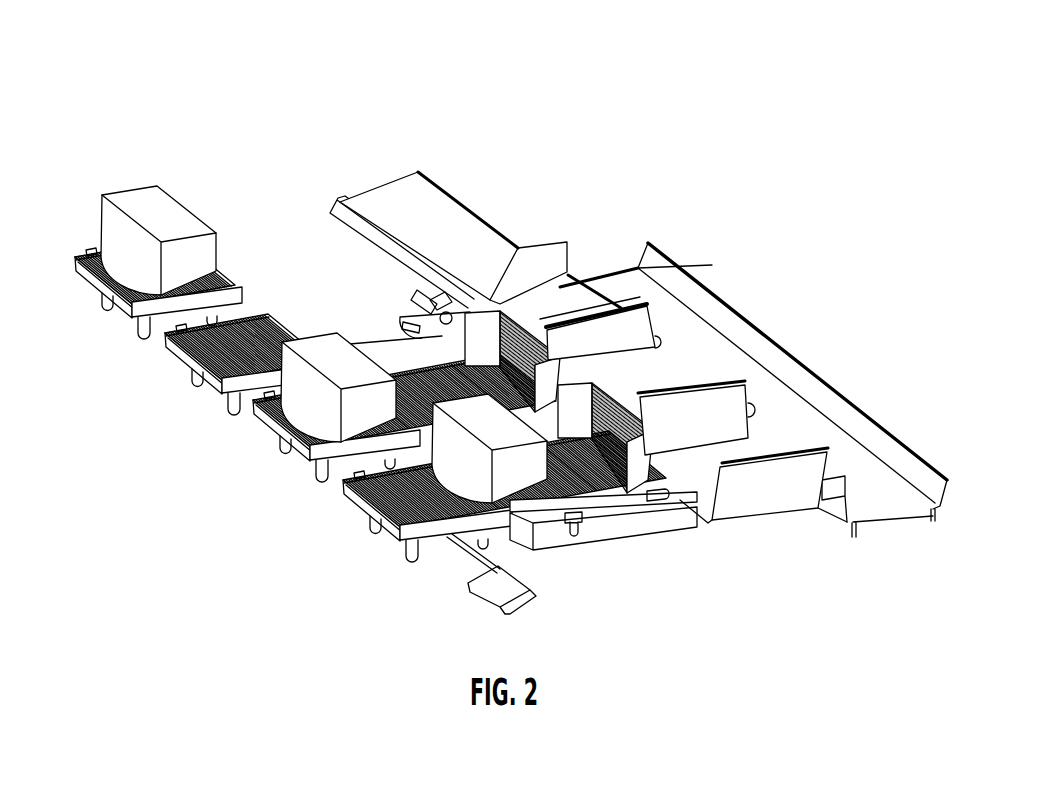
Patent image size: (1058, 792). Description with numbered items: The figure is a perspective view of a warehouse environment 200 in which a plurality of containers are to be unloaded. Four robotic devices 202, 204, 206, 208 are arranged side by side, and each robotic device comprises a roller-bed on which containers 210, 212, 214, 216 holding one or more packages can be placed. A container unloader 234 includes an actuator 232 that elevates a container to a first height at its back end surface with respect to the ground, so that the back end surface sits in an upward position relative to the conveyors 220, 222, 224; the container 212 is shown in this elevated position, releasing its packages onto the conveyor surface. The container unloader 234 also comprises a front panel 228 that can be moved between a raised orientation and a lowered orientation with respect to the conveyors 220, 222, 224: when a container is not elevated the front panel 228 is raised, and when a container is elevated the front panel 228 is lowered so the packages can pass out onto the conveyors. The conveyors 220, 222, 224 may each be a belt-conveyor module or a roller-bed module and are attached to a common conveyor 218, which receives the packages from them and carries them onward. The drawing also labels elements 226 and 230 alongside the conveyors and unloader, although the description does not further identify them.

The warehouse environment 200 is at (205, 148).
The robotic device 202 is at (112, 283).
The robotic device 204 is at (209, 350).
The robotic device 206 is at (285, 425).
The robotic device 208 is at (380, 492).
The container 210 is at (147, 212).
The container 212 is at (440, 217).
The container 214 is at (333, 362).
The container 216 is at (507, 470).
The common conveyor 218 is at (764, 446).
The conveyor 220 is at (600, 297).
The conveyor 222 is at (782, 394).
The conveyor 224 is at (772, 452).
The stop plate 226 is at (488, 330).
The front panel 228 is at (502, 307).
The guide plate 230 is at (662, 369).
The actuator 232 is at (432, 336).
The container unloader 234 is at (375, 184).